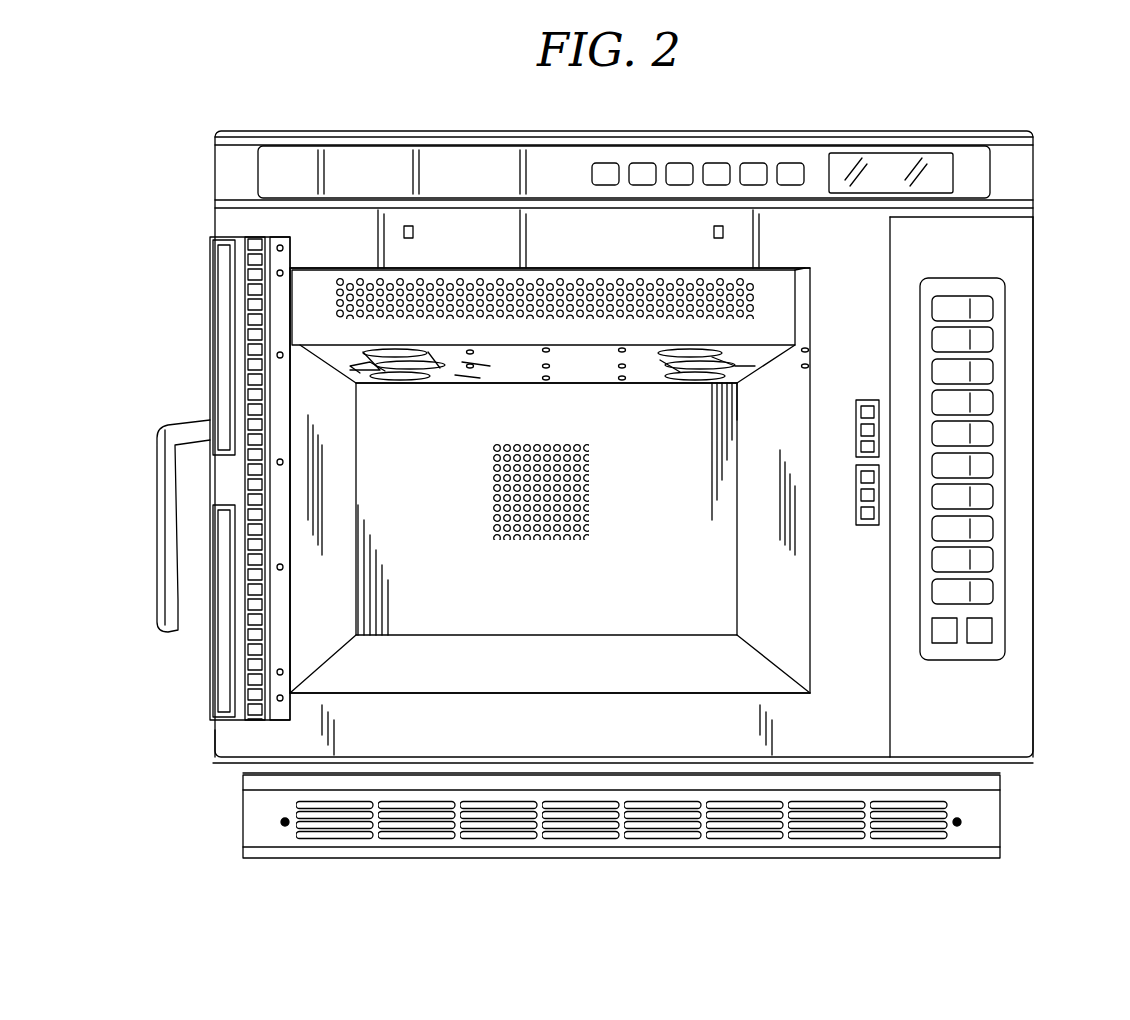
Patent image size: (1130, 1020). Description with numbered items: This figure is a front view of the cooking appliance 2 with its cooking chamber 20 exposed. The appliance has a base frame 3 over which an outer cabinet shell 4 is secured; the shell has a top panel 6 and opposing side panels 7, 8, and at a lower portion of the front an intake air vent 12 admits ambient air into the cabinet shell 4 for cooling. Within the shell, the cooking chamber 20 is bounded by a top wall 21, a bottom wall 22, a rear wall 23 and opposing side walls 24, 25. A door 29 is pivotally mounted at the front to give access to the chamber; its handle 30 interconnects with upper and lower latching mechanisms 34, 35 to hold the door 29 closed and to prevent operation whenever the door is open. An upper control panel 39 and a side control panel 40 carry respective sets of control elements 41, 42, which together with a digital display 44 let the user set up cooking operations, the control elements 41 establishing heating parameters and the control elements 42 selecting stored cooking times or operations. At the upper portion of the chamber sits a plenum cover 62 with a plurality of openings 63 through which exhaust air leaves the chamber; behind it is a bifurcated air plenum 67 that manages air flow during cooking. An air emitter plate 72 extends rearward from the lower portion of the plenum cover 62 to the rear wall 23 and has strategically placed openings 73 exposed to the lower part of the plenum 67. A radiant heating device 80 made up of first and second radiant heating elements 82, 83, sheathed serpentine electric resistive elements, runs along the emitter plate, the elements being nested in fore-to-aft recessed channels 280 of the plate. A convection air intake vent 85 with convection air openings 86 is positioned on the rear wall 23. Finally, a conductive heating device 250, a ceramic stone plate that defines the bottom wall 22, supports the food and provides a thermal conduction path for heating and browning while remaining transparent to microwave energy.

The cooking appliance 2 is at (228, 113).
The base frame 3 is at (975, 860).
The outer cabinet shell 4 is at (213, 160).
The top panel 6 is at (1033, 135).
The side panel 7 is at (1040, 232).
The side panel 8 is at (215, 746).
The intake air vent 12 is at (965, 828).
The cooking chamber 20 is at (320, 390).
The top wall 21 is at (300, 268).
The bottom wall 22 is at (650, 660).
The rear wall 23 is at (676, 503).
The side wall 24 is at (330, 477).
The side wall 25 is at (745, 528).
The door 29 is at (205, 685).
The handle 30 is at (205, 470).
The upper latching mechanism 34 is at (856, 412).
The lower latching mechanism 35 is at (856, 500).
The upper control panel 39 is at (478, 160).
The side control panel 40 is at (1010, 722).
The control elements 41 is at (648, 160).
The control elements 42 is at (990, 372).
The digital display 44 is at (930, 158).
The plenum cover 62 is at (785, 272).
The openings 63 is at (758, 322).
The bifurcated air plenum 67 is at (305, 305).
The air emitter plate 72 is at (575, 375).
The openings 73 is at (620, 380).
The radiant heating device 80 is at (420, 383).
The first radiant heating element 82 is at (372, 382).
The second radiant heating element 83 is at (728, 372).
The convection air intake vent 85 is at (530, 555).
The convection air openings 86 is at (492, 515).
The conductive heating device 250 is at (505, 655).
The recessed channels 280 is at (470, 376).